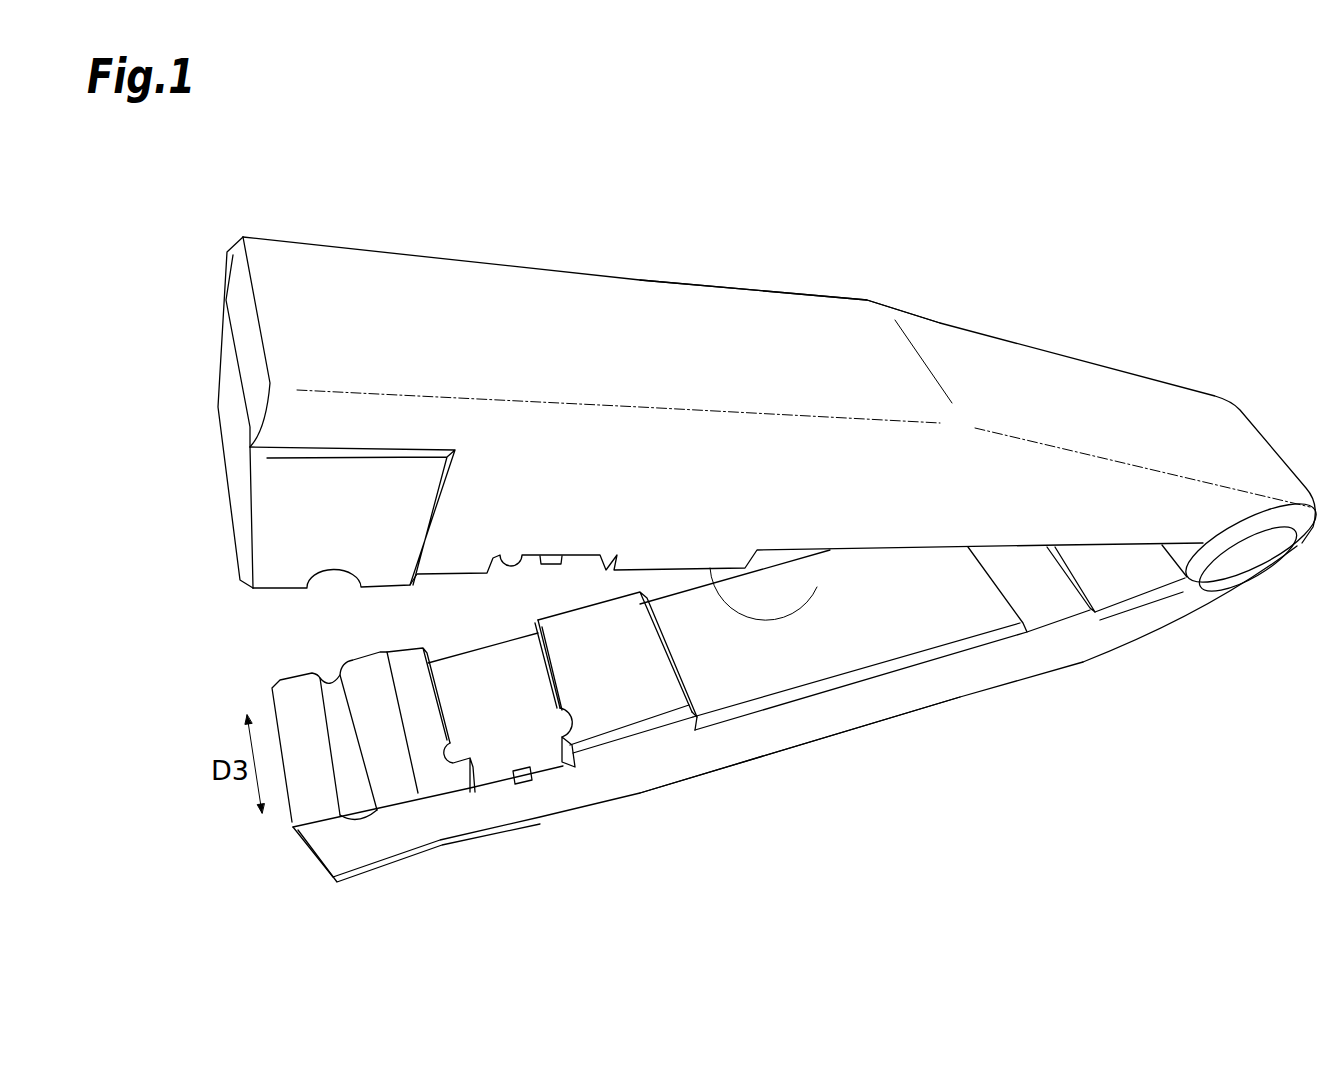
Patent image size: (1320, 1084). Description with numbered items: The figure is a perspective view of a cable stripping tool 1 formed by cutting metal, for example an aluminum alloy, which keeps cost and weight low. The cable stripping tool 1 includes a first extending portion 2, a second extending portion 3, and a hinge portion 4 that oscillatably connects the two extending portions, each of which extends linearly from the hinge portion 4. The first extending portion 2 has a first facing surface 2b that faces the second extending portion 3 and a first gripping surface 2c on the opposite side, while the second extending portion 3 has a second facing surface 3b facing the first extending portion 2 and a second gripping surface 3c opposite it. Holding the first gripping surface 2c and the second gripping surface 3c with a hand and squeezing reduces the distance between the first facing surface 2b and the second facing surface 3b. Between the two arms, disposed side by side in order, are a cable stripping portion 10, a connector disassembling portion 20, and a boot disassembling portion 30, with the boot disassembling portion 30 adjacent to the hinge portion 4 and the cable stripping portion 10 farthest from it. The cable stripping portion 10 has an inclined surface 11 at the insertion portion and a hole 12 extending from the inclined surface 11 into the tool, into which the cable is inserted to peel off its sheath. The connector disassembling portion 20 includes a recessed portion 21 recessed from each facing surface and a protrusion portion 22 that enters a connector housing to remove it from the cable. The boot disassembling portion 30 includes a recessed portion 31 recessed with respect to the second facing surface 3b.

The cable stripping tool 1 is at (736, 179).
The first extending portion 2 is at (568, 324).
The first facing surface 2b is at (817, 587).
The first gripping surface 2c is at (780, 322).
The second extending portion 3 is at (712, 746).
The second facing surface 3b is at (665, 705).
The second gripping surface 3c is at (765, 760).
The hinge portion 4 is at (1247, 572).
The cable stripping portion 10 is at (354, 759).
The inclined surface 11 is at (349, 666).
The hole 12 is at (332, 697).
The connector disassembling portion 20 is at (492, 804).
The recessed portion 21 is at (507, 553).
The protrusion portion 22 is at (549, 565).
The boot disassembling portion 30 is at (1068, 634).
The recessed portion 31 is at (1041, 620).